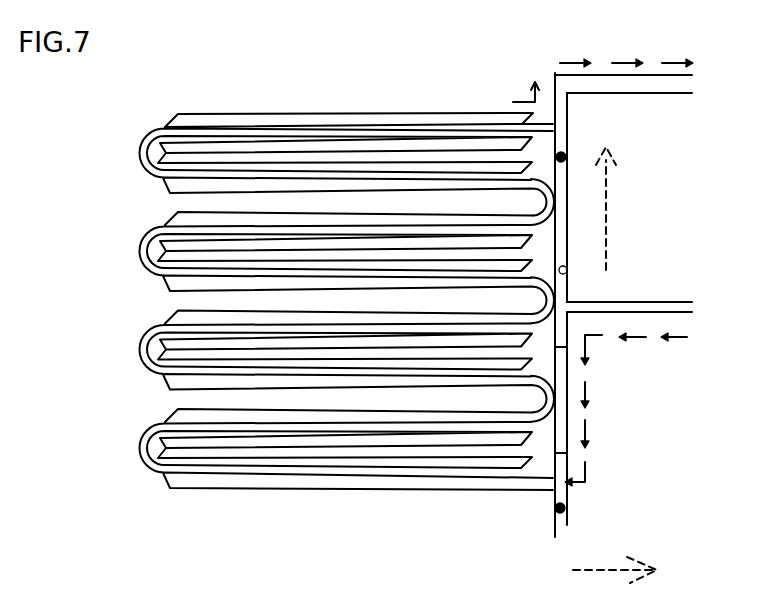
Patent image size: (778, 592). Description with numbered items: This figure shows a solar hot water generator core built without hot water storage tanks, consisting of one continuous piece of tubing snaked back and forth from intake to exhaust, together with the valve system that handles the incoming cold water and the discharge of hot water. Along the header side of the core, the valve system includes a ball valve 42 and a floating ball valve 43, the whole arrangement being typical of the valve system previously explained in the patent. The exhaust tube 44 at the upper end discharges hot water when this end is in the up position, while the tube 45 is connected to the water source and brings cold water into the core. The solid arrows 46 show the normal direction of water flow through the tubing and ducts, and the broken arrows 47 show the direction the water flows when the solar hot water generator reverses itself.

The valve system with ball valve 42 is at (566, 155).
The valve system with floating ball valve 43 is at (568, 270).
The exhaust tube 44 is at (667, 95).
The tube connected to the water source 45 is at (656, 302).
The arrow direction of water flow 46 is at (588, 435).
The broken arrows showing reversed water flow direction 47 is at (609, 222).